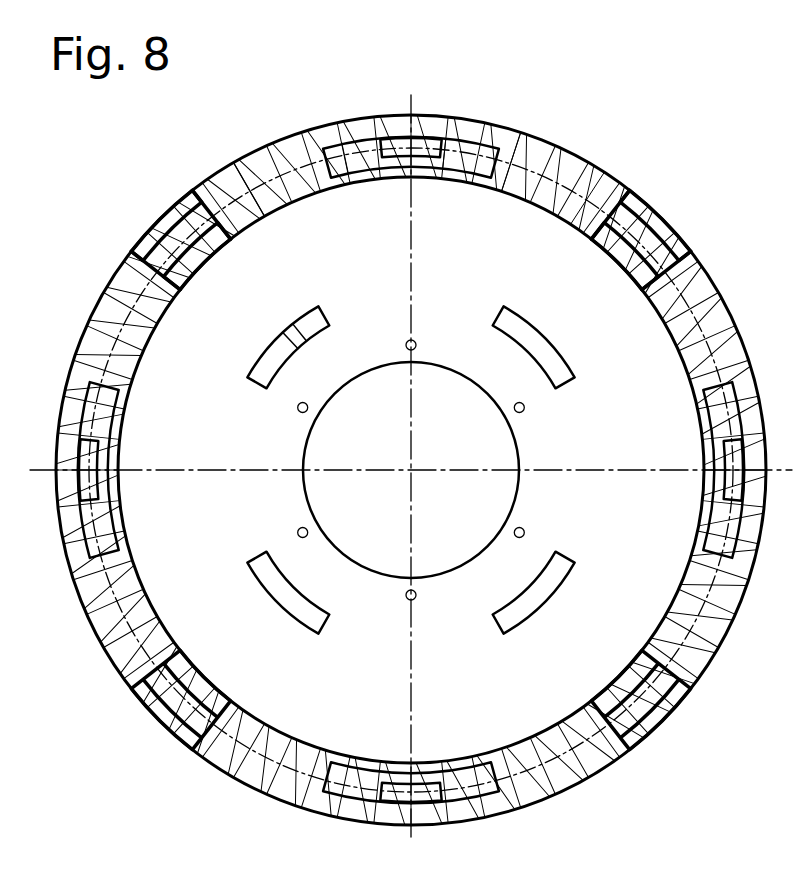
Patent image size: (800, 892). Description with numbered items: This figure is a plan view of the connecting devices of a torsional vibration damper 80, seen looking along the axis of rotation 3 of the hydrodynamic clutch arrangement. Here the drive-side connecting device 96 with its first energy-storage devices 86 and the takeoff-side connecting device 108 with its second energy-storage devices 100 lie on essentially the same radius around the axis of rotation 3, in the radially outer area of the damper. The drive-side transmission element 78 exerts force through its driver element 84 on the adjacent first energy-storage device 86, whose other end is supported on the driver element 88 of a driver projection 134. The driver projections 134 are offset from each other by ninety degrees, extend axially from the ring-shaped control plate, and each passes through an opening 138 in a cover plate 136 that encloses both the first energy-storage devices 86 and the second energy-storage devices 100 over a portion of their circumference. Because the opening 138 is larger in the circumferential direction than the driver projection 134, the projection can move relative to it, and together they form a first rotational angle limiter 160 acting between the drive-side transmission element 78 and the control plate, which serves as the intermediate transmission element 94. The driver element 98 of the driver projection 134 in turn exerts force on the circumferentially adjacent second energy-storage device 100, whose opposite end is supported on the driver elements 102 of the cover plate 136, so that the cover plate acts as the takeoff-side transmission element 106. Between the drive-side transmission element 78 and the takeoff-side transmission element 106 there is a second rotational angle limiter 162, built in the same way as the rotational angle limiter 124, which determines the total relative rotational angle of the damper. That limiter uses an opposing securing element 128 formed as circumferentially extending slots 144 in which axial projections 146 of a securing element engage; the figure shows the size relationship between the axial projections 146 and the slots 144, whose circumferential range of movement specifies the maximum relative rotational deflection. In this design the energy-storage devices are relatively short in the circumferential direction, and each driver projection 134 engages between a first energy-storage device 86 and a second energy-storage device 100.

The axis of rotation 3 is at (408, 474).
The drive-side transmission element 78 is at (157, 230).
The torsional vibration damper 80 is at (72, 300).
The driver element 84 is at (182, 200).
The first energy-storage device 86 is at (290, 163).
The driver element 88 is at (383, 150).
The intermediate transmission element 94 is at (396, 142).
The drive-side connecting device 96 is at (250, 173).
The driver element 98 is at (443, 150).
The second energy-storage device 100 is at (598, 185).
The driver element 102 is at (683, 247).
The takeoff-side transmission element 106 is at (610, 272).
The takeoff-side connecting device 108 is at (622, 184).
The rotational angle limiter 124 is at (259, 373).
The opposing securing element 128 is at (259, 342).
The driver projection 134 is at (447, 145).
The cover plate 136 is at (492, 681).
The opening 138 is at (520, 133).
The slot 144 is at (318, 312).
The axial projection 146 is at (275, 345).
The first rotational angle limiter 160 is at (340, 148).
The second rotational angle limiter 162 is at (259, 373).